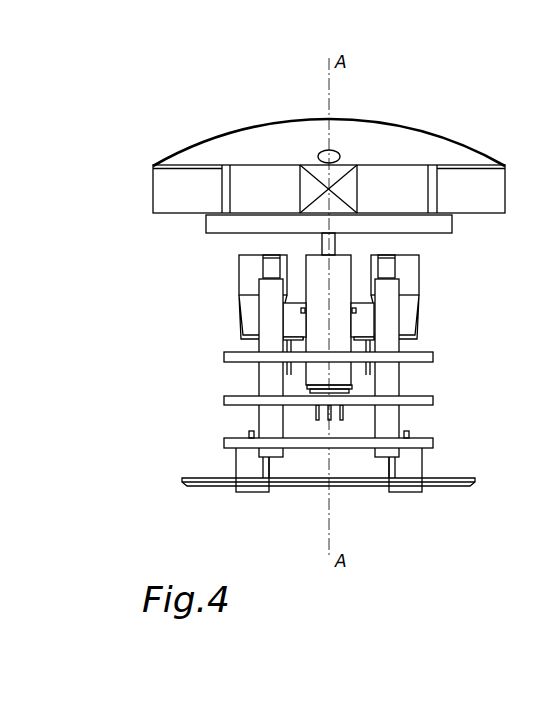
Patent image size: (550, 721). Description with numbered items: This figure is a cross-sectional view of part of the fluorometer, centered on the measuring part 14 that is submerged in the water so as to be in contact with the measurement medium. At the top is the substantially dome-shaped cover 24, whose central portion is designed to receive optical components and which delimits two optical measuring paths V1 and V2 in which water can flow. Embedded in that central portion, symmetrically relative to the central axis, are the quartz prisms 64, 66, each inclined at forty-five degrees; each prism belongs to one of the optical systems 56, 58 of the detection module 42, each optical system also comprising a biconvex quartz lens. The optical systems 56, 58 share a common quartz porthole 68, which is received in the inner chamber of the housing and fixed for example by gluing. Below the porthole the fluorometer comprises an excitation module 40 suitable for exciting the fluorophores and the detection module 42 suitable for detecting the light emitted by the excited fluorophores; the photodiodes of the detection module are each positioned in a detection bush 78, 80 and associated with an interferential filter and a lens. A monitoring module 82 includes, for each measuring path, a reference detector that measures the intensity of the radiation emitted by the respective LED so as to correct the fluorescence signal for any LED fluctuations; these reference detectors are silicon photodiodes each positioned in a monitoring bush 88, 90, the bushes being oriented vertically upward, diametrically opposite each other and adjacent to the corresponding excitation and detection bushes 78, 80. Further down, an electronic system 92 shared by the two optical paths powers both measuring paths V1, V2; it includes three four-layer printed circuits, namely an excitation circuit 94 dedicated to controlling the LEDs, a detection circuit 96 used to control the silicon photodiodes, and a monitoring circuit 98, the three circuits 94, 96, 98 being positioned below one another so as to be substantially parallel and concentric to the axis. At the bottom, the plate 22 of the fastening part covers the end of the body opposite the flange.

The measuring part 14 is at (283, 173).
The optical measuring path V1 is at (225, 162).
The optical measuring path V2 is at (435, 162).
The quartz prism 64 is at (293, 183).
The quartz prism 66 is at (351, 163).
The cover 24 is at (367, 135).
The quartz porthole 68 is at (218, 224).
The excitation module 40 is at (219, 326).
The detection bush 78 is at (239, 272).
The detection bush 80 is at (410, 263).
The optical system 58 is at (452, 301).
The optical system 56 is at (208, 317).
The monitoring bush 88 is at (293, 325).
The monitoring bush 90 is at (367, 313).
The monitoring module 82 is at (210, 368).
The detection module 42 is at (253, 368).
The detection circuit 96 is at (433, 356).
The excitation circuit 94 is at (433, 400).
The electronic system 92 is at (260, 452).
The monitoring circuit 98 is at (228, 442).
The plate 22 is at (180, 480).